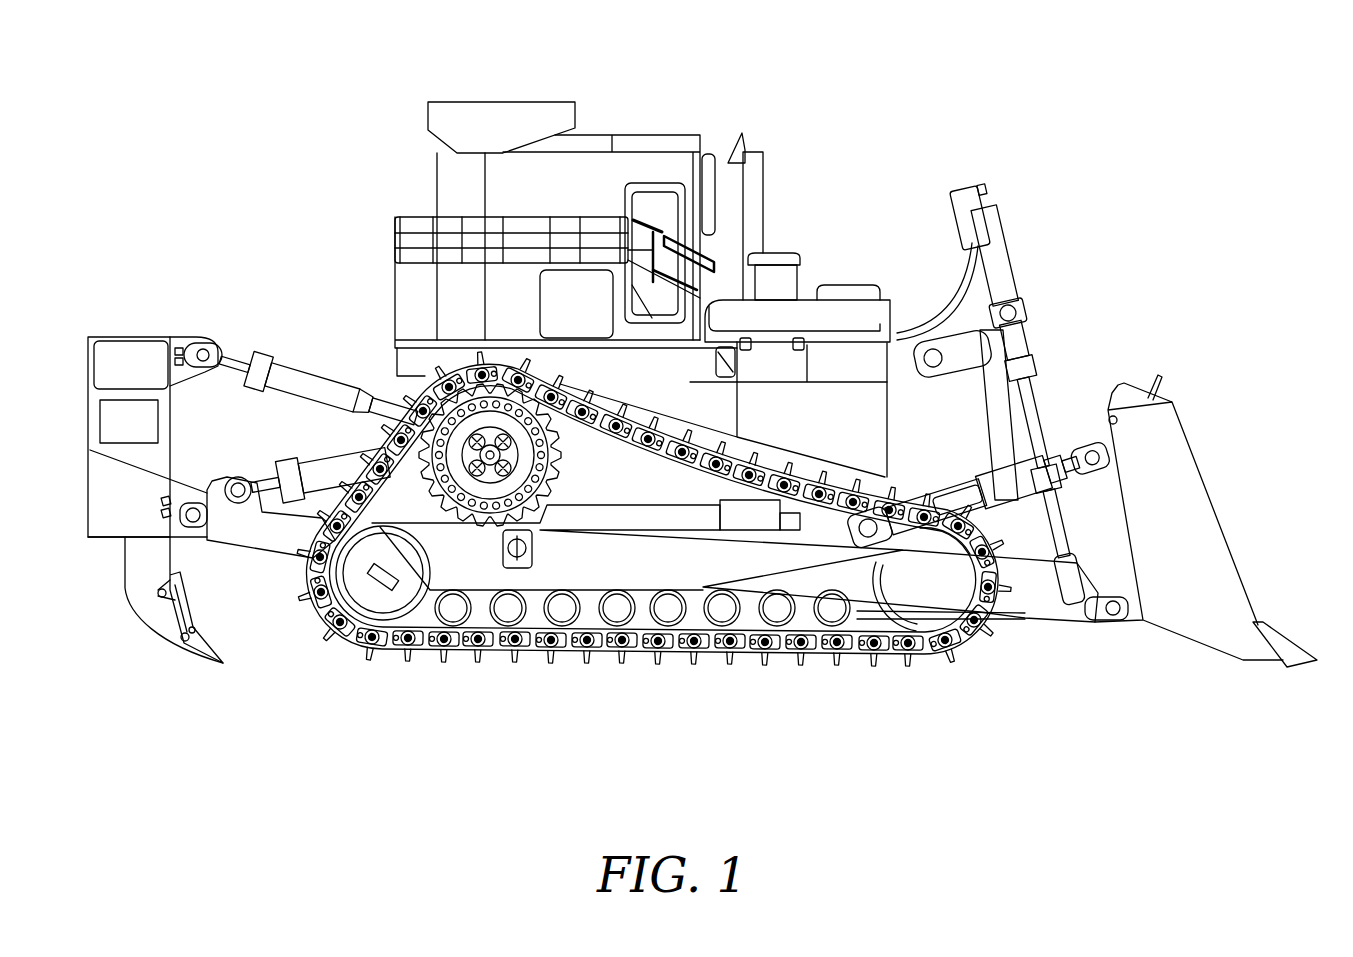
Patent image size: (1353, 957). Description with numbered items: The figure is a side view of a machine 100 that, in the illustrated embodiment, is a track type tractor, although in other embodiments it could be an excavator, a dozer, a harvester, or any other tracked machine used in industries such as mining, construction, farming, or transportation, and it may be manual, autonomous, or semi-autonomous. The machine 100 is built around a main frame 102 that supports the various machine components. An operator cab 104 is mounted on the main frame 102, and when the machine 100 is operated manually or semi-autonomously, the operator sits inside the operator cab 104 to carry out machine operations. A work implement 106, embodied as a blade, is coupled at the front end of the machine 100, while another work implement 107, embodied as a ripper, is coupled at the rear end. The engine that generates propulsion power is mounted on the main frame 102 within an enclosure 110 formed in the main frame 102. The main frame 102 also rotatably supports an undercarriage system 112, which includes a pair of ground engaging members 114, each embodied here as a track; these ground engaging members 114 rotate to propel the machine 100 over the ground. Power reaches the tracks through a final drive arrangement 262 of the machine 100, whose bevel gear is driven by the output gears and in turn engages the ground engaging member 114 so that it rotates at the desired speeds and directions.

The machine 100 is at (1205, 84).
The main frame 102 is at (688, 400).
The operator cab 104 is at (597, 160).
The work implement 106 is at (1200, 517).
The work implement 107 is at (128, 348).
The enclosure 110 is at (848, 390).
The undercarriage system 112 is at (321, 641).
The ground engaging member 114 is at (530, 653).
The final drive arrangement 262 is at (572, 458).